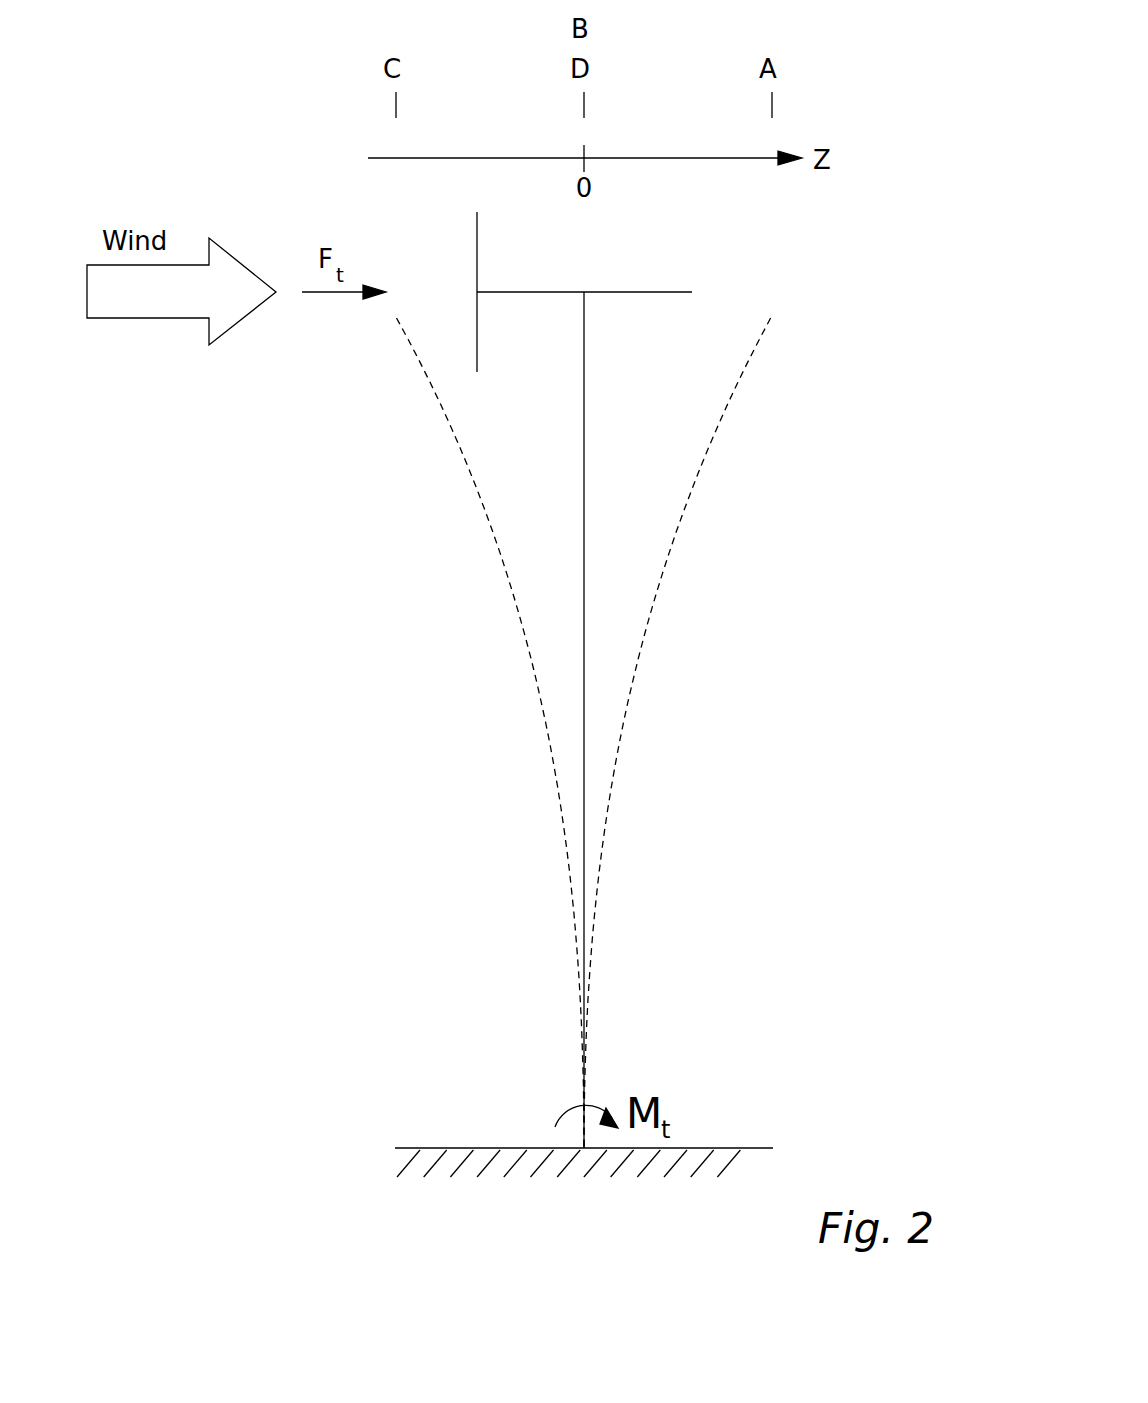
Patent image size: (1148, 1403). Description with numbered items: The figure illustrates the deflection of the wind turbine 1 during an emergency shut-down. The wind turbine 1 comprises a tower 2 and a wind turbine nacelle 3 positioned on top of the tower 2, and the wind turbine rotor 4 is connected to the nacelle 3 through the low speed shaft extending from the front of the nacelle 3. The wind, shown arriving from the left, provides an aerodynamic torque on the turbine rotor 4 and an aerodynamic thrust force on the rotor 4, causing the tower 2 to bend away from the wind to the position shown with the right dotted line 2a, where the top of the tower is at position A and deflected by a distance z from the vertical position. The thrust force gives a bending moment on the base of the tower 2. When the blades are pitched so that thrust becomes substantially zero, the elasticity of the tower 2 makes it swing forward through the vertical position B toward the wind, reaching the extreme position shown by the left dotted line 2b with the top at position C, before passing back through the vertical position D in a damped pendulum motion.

The wind turbine 1 is at (365, 528).
The tower 2 is at (584, 837).
The right dotted line 2a is at (648, 617).
The tower deflected position (upwind) 2b is at (528, 648).
The wind turbine nacelle 3 is at (550, 292).
The wind turbine rotor 4 is at (478, 242).